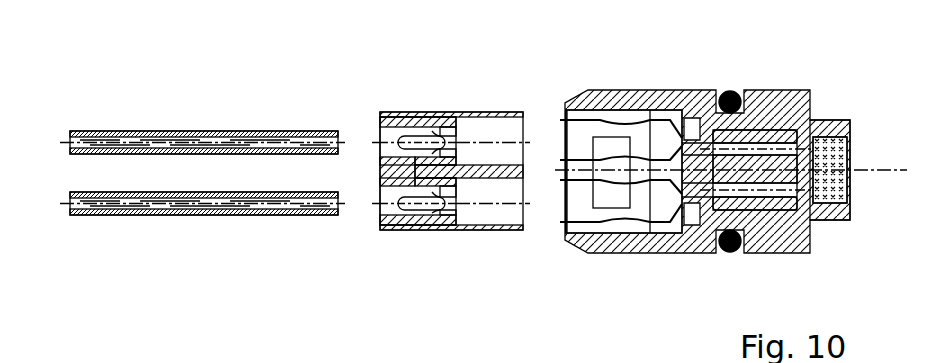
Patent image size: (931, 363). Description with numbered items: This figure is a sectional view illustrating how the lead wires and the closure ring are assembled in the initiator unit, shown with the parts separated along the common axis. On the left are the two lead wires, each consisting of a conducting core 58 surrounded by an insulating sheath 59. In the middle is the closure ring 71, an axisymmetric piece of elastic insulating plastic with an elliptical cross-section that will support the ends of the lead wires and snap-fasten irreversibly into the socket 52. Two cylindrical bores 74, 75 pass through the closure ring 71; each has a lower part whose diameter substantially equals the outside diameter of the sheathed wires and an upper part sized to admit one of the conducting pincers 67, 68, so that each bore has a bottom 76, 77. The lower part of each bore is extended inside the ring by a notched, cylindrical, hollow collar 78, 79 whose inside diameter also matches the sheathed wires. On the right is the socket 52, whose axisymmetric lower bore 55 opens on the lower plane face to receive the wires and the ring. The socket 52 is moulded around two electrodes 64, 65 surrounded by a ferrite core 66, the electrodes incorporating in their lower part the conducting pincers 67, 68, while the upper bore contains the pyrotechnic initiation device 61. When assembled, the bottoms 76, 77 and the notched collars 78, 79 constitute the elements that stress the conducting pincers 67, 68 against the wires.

The socket 52 is at (737, 170).
The lower bore 55 is at (620, 110).
The conducting core 58 is at (168, 141).
The insulating sheath 59 is at (202, 152).
The pyrotechnic initiation device 61 is at (858, 161).
The electrode 64 is at (803, 109).
The electrode 65 is at (792, 212).
The ferrite core 66 is at (777, 208).
The conducting pincer 67 is at (652, 233).
The conducting pincer 68 is at (668, 110).
The closure ring 71 is at (454, 160).
The cylindrical bore 74 is at (390, 112).
The cylindrical bore 75 is at (385, 230).
The bottom 76 is at (423, 112).
The bottom 77 is at (408, 230).
The notched collar 78 is at (452, 112).
The notched collar 79 is at (455, 230).